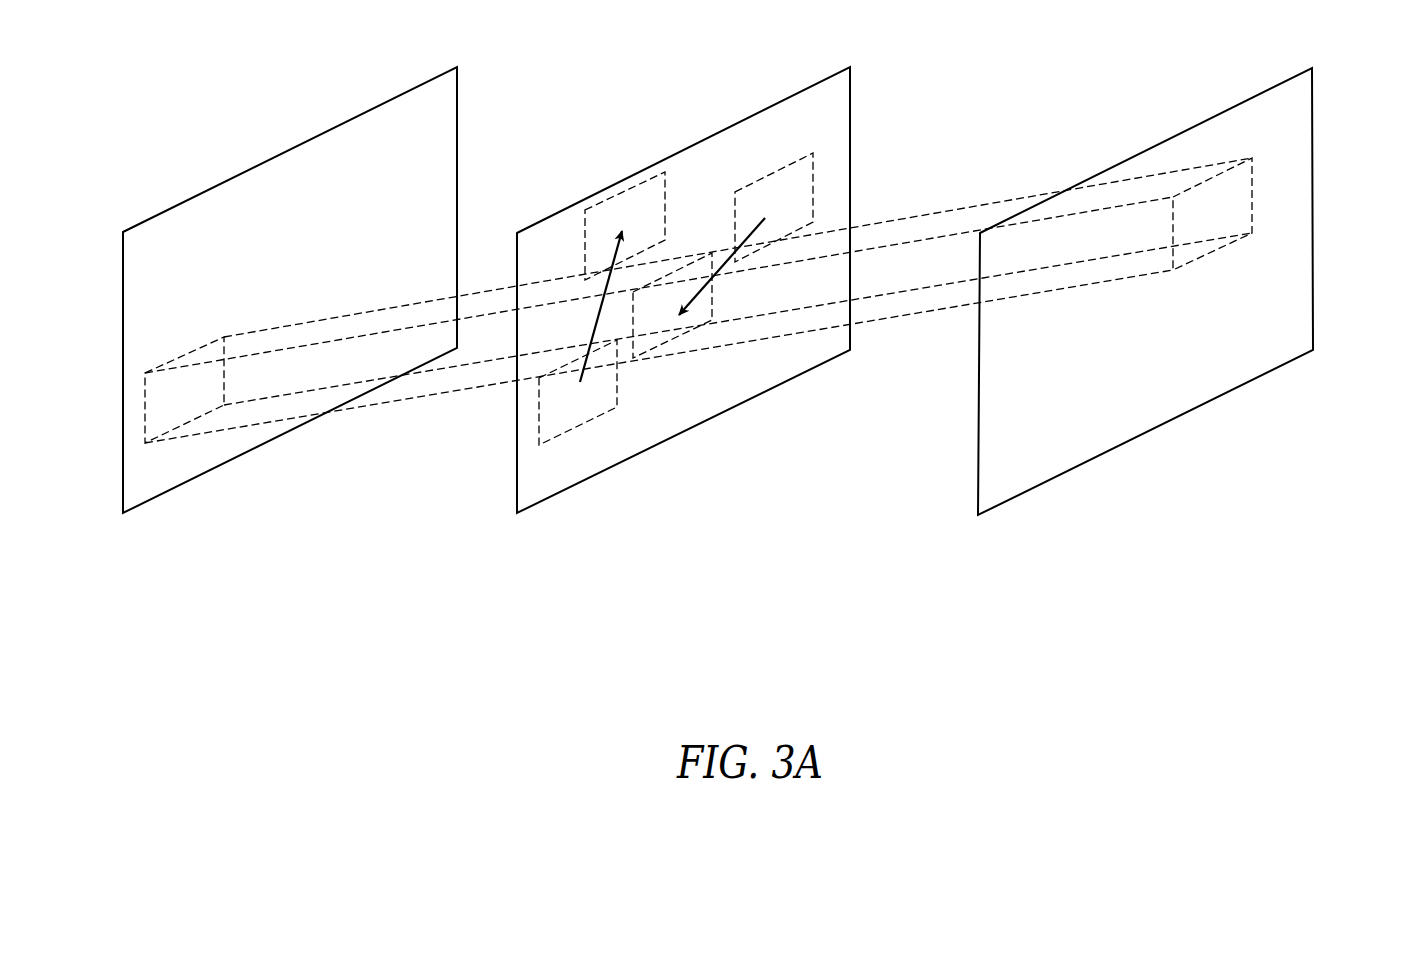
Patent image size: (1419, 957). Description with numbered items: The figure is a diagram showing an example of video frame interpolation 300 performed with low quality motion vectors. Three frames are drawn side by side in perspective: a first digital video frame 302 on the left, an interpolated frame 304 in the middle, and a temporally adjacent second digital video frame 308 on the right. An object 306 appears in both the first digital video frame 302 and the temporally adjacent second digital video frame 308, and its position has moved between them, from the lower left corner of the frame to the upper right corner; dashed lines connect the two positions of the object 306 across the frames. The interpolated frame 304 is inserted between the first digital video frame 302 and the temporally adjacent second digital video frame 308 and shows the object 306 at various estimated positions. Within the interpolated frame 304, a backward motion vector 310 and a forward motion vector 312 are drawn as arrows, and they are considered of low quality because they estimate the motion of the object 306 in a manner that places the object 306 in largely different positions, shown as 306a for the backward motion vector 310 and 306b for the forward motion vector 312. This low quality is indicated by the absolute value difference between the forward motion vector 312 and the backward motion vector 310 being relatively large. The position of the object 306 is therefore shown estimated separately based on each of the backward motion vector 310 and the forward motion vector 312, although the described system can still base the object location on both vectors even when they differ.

The video frame interpolation 300 is at (568, 575).
The first digital video frame 302 is at (323, 155).
The interpolated frame 304 is at (698, 172).
The object 306 is at (187, 353).
The object position estimated by backward motion vector 306a is at (677, 338).
The object position estimated by forward motion vector 306b is at (585, 245).
The temporally adjacent second digital video frame 308 is at (1178, 158).
The backward motion vector 310 is at (727, 262).
The forward motion vector 312 is at (600, 312).